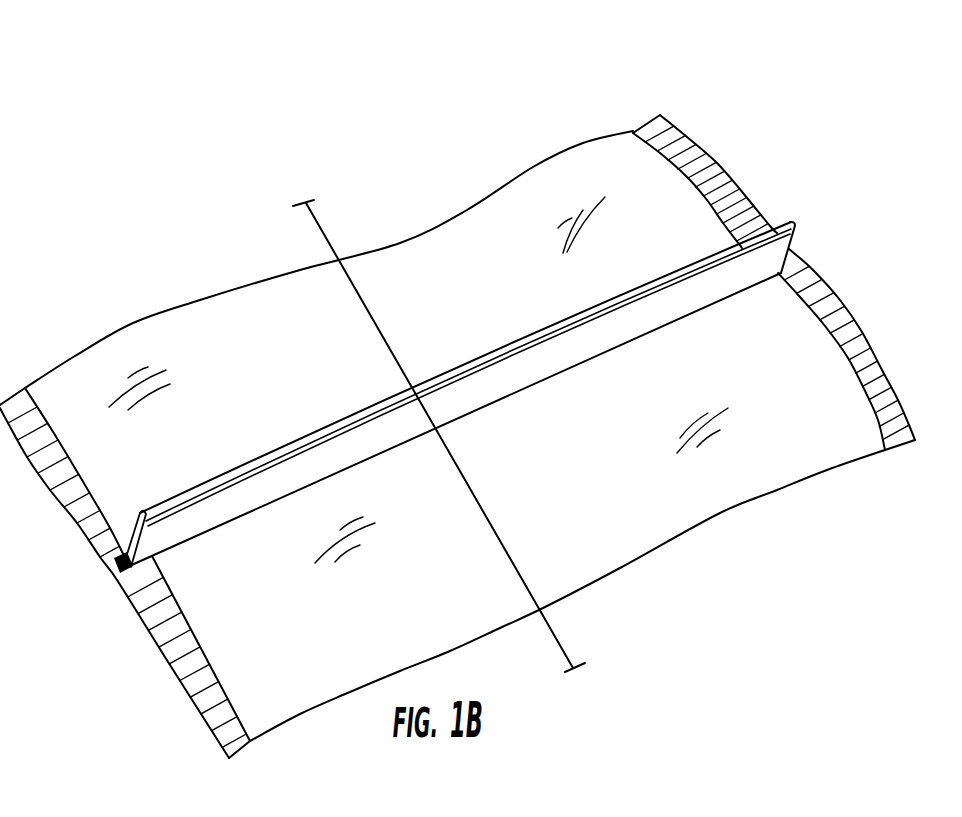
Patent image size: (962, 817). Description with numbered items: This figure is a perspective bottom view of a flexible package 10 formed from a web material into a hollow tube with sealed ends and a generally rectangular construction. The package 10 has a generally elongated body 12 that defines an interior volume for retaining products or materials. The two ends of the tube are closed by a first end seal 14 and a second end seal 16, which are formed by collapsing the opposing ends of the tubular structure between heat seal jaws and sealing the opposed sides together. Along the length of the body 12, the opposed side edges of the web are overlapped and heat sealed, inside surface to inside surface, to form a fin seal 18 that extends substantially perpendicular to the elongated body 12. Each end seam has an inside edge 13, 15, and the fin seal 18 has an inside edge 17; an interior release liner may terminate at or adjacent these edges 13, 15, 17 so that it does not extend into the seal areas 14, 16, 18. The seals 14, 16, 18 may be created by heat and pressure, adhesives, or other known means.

The flexible package 10 is at (767, 93).
The elongated body 12 is at (603, 543).
The inside edge of end seam 13 is at (186, 607).
The first end seal 14 is at (165, 617).
The inside edge of end seam 15 is at (833, 333).
The second end seal 16 is at (835, 303).
The inside edge of fin seal 17 is at (580, 366).
The fin seal 18 is at (680, 297).